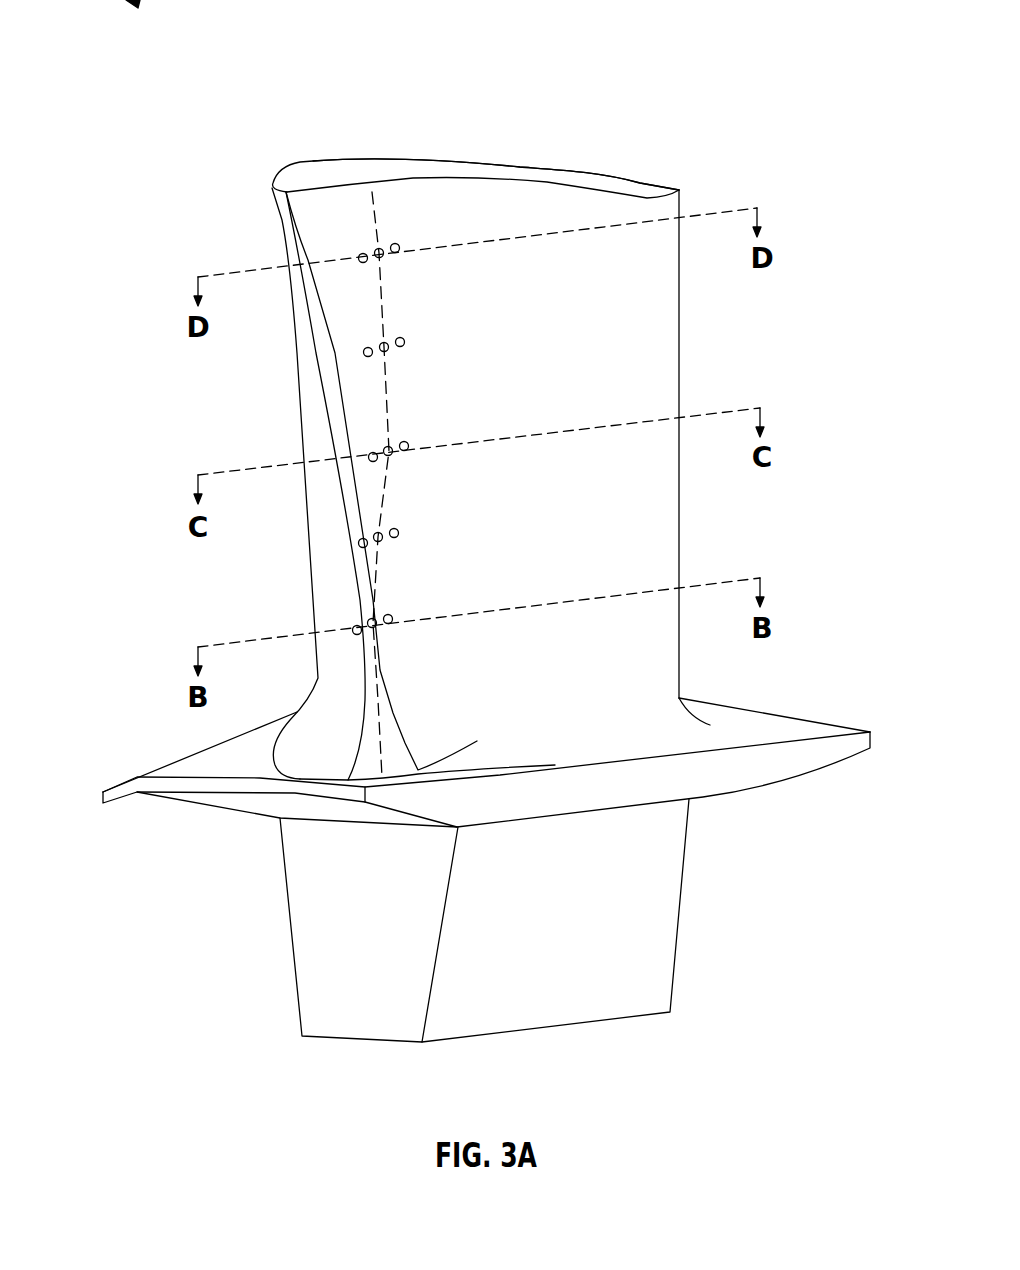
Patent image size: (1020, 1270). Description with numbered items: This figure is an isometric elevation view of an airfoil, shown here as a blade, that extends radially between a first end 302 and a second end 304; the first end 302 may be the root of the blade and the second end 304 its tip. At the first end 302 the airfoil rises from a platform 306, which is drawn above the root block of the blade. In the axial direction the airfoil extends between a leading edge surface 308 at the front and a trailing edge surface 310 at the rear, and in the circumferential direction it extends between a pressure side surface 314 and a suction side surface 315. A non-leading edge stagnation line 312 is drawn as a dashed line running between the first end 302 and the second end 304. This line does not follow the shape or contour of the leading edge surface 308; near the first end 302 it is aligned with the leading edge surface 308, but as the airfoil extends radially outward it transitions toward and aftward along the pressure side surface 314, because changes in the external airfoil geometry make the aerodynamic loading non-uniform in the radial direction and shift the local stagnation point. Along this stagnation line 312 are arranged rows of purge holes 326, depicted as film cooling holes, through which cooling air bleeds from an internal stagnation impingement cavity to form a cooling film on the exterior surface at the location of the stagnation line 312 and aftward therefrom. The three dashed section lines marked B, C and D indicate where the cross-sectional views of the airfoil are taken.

The first end 302 is at (662, 733).
The second end 304 is at (320, 175).
The platform 306 is at (215, 787).
The leading edge surface 308 is at (345, 428).
The trailing edge surface 310 is at (680, 373).
The non-leading edge stagnation line 312 is at (388, 393).
The pressure side surface 314 is at (567, 200).
The suction side surface 315 is at (312, 568).
The purge holes 326 is at (384, 258).